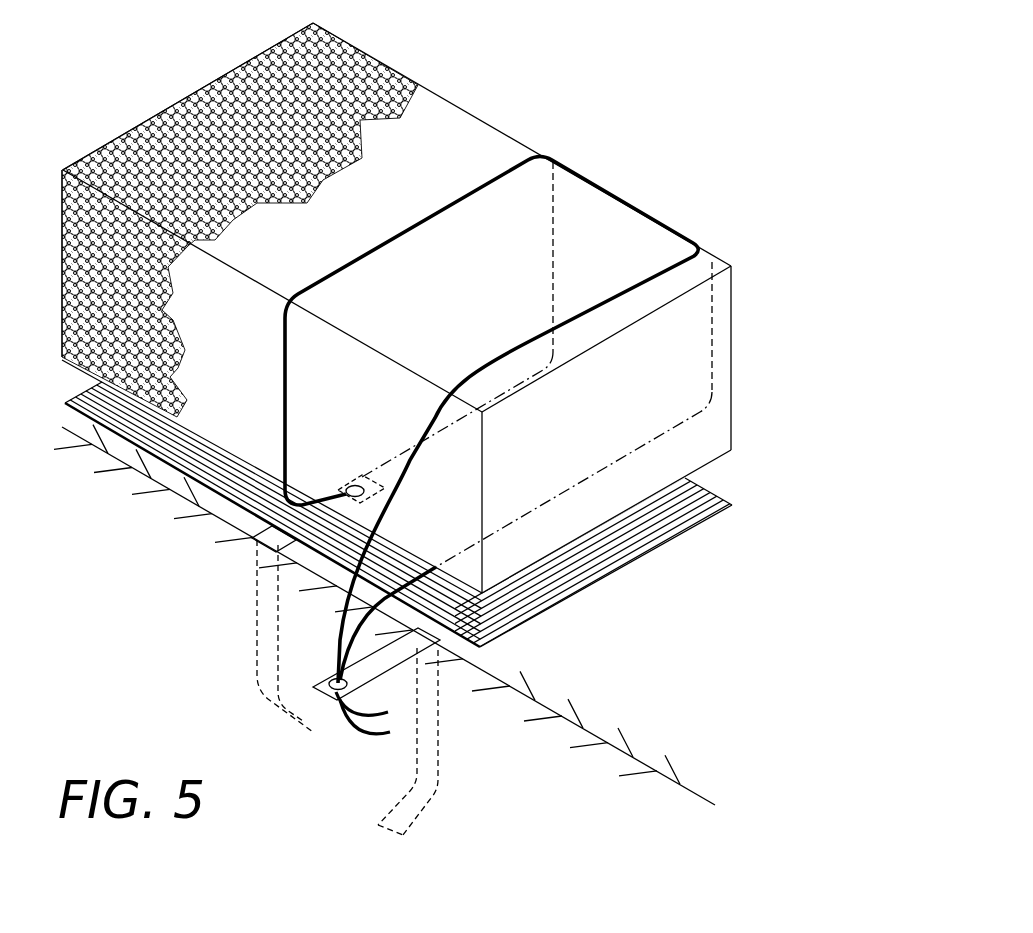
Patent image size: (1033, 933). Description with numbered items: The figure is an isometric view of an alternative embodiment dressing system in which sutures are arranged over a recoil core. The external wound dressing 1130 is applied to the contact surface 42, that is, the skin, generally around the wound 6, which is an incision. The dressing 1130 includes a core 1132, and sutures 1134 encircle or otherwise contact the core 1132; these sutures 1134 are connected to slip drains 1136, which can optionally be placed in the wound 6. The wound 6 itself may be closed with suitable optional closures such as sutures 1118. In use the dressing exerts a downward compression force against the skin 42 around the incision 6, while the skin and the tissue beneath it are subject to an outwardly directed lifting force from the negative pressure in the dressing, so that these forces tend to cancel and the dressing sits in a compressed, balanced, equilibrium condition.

The external wound dressing 1130 is at (622, 87).
The core 1132 is at (733, 265).
The sutures 1134 is at (507, 350).
The slip drains 1136 is at (363, 480).
The sutures 1118 is at (197, 512).
The wound 6 is at (549, 703).
The contact surface 42 is at (646, 679).